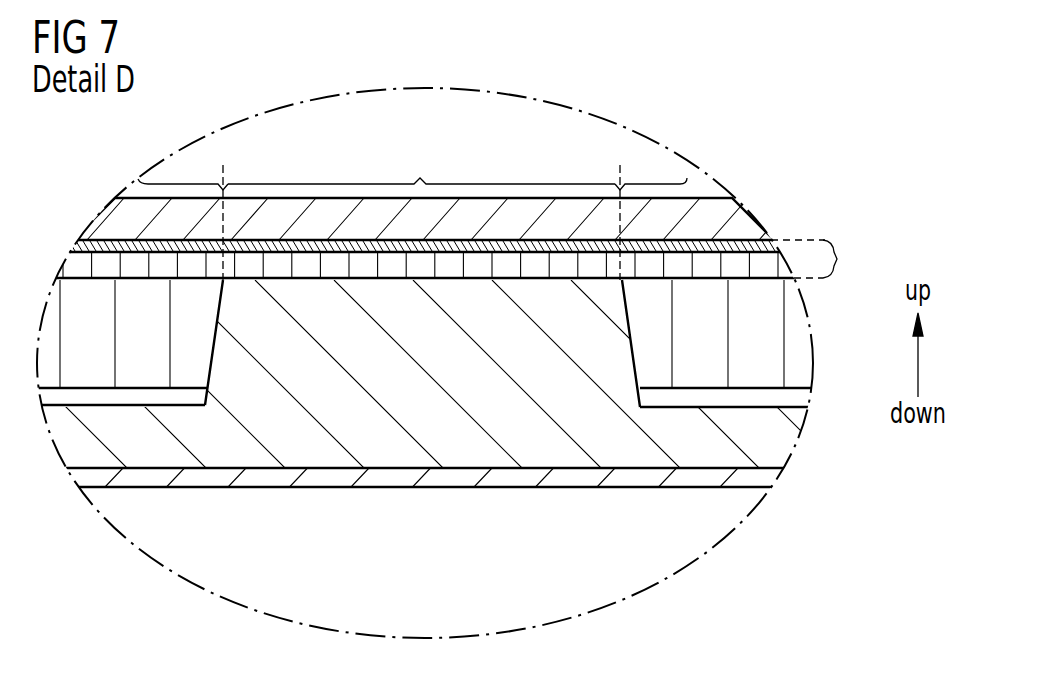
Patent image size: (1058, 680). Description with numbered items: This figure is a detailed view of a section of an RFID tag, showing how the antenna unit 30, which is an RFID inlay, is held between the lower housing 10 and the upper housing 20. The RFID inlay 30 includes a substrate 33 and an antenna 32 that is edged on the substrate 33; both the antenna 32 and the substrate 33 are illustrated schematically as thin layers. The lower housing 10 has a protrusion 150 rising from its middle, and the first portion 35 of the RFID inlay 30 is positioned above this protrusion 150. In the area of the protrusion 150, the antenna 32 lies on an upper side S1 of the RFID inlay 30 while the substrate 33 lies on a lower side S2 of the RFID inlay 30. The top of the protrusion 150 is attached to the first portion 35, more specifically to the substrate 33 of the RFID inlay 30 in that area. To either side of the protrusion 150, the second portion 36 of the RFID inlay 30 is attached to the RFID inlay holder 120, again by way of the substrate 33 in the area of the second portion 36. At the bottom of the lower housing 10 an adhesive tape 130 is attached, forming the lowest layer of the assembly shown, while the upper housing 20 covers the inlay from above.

The lower housing 10 is at (703, 428).
The protrusion 150 is at (447, 360).
The RFID inlay holder 120 is at (763, 380).
The adhesive tape 130 is at (327, 478).
The upper housing 20 is at (648, 217).
The antenna unit (RFID inlay) 30 is at (420, 206).
The antenna 32 is at (698, 241).
The substrate 33 is at (745, 273).
The first portion 35 is at (421, 213).
The second portion 36 is at (155, 182).
The upper side S1 is at (100, 224).
The lower side S2 is at (129, 292).